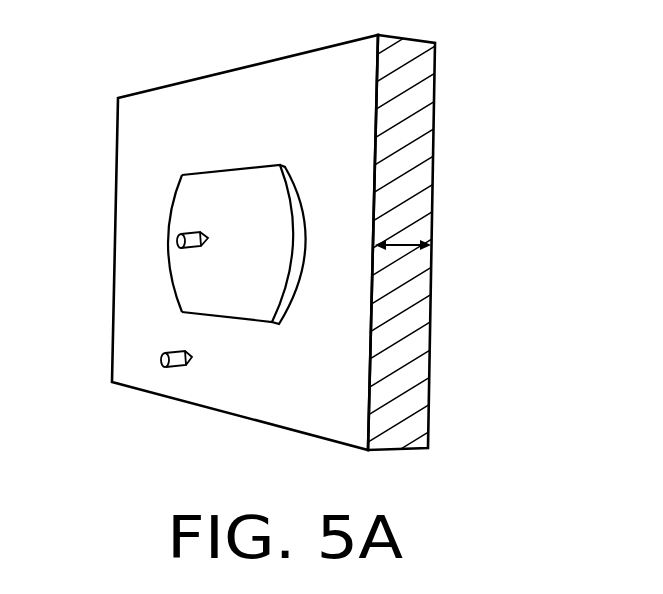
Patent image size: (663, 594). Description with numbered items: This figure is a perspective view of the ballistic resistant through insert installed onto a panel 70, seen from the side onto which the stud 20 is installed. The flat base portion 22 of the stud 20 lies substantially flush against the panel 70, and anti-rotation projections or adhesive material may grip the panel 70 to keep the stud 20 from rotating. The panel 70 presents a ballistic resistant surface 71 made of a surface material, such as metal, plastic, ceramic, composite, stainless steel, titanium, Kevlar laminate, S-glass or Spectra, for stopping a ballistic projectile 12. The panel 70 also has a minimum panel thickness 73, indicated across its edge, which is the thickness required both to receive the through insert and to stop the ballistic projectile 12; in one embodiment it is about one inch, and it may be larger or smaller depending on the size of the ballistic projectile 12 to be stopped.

The ballistic projectile 12 is at (178, 233).
The stud 20 is at (215, 216).
The flat base portion 22 is at (195, 280).
The panel 70 is at (279, 245).
The ballistic resistant surface 71 is at (280, 90).
The minimum panel thickness 73 is at (407, 240).